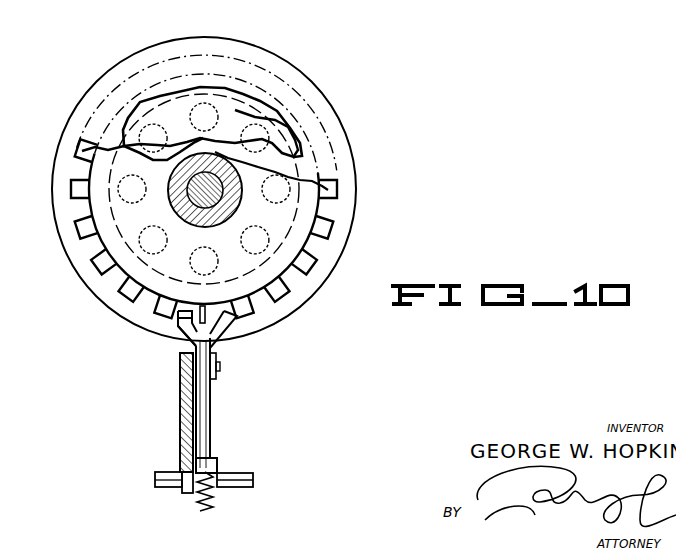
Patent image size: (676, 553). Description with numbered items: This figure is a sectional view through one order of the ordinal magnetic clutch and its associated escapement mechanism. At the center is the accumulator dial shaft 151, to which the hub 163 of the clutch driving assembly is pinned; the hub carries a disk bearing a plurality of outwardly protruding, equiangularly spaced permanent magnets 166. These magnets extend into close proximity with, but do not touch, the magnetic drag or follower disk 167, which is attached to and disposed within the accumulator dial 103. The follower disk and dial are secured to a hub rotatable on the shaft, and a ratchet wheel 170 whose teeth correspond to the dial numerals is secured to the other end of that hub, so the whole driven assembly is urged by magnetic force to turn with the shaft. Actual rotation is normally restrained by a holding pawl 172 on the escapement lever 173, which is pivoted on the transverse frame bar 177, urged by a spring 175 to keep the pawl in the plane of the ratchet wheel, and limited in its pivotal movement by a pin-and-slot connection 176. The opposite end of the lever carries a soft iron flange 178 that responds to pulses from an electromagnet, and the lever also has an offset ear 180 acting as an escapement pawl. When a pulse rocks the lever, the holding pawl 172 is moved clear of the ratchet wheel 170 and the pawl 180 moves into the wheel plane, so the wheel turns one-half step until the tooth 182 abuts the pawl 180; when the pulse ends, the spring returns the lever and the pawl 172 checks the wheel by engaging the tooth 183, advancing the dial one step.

The accumulator dial 103 is at (99, 80).
The accumulator dial shaft 151 is at (172, 204).
The hub 163 is at (226, 205).
The permanent magnets 166 is at (142, 244).
The magnetic drag or follower disk 167 is at (237, 113).
The ratchet wheel 170 is at (312, 211).
The holding pawl 172 is at (233, 338).
The escapement lever 173 is at (208, 412).
The spring 175 is at (213, 506).
The pin-and-slot connection 176 is at (222, 371).
The transverse frame bar 177 is at (186, 418).
The flange 178 is at (233, 482).
The offset ear 180 is at (202, 327).
The tooth 182 is at (193, 338).
The tooth 183 is at (282, 296).